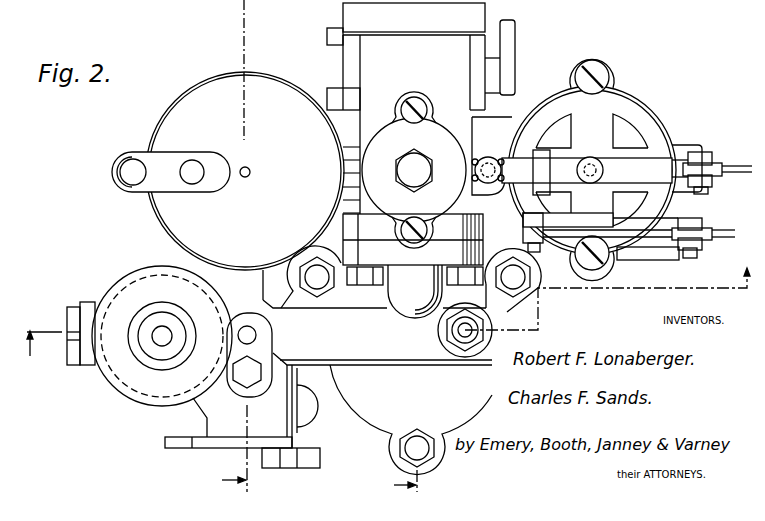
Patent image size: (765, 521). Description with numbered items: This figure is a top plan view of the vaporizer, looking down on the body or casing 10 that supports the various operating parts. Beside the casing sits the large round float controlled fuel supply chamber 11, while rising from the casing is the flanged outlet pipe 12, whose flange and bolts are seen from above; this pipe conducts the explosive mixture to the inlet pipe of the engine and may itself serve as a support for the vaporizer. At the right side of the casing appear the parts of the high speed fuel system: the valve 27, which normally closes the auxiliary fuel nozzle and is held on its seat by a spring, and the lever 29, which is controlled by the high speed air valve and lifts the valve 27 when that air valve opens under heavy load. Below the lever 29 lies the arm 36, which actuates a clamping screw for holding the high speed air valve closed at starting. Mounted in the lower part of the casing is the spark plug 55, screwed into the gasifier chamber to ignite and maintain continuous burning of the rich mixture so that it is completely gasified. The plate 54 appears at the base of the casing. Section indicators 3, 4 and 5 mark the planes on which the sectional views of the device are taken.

The body or casing 10 is at (381, 394).
The float controlled fuel supply chamber 11 is at (272, 138).
The flanged outlet pipe 12 is at (443, 63).
The valve 27 is at (490, 158).
The lever 29 is at (563, 165).
The arm 36 is at (576, 217).
The base plate 54 is at (178, 442).
The spark plug 55 is at (462, 338).
The section line 3- 3 is at (398, 482).
The section line 4- 4 is at (226, 448).
The section line 5- 5 is at (386, 312).